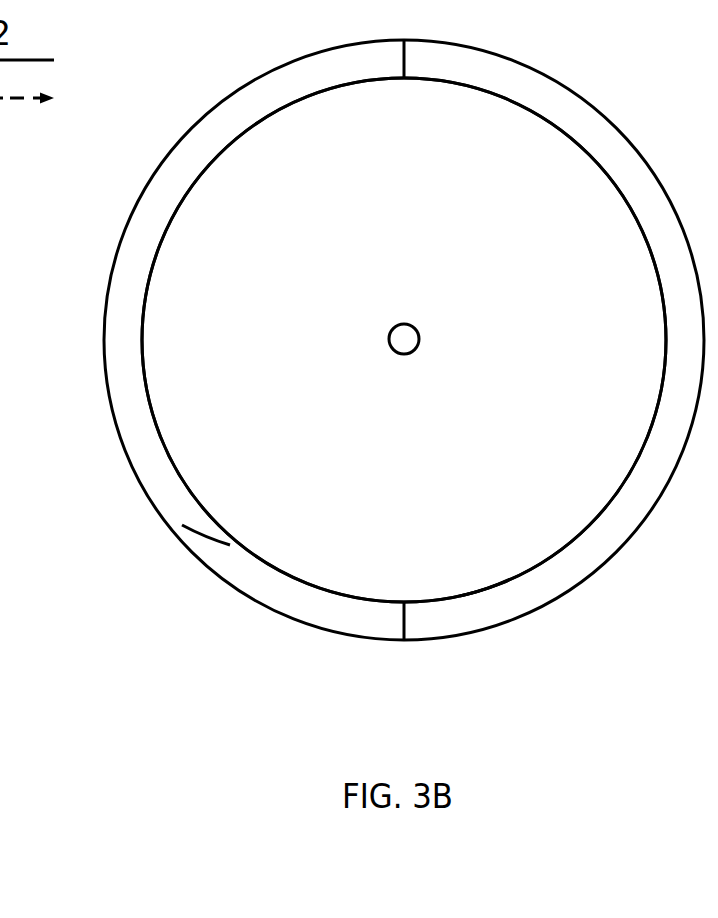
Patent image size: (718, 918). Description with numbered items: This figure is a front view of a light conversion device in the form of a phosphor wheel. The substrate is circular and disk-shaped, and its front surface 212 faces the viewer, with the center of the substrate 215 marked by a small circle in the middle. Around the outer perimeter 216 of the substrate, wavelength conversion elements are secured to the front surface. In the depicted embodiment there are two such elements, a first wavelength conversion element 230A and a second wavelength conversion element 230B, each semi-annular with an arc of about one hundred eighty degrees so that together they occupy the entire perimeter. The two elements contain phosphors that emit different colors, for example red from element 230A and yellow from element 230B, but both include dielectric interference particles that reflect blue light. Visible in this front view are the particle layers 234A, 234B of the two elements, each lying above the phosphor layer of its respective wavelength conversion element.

The front surface 212 is at (332, 253).
The center of the substrate 215 is at (420, 335).
The outer perimeter 216 is at (356, 347).
The wavelength conversion element 230A is at (117, 433).
The wavelength conversion element 230B is at (598, 572).
The particle layer 234A is at (182, 507).
The particle layer 234B is at (485, 612).